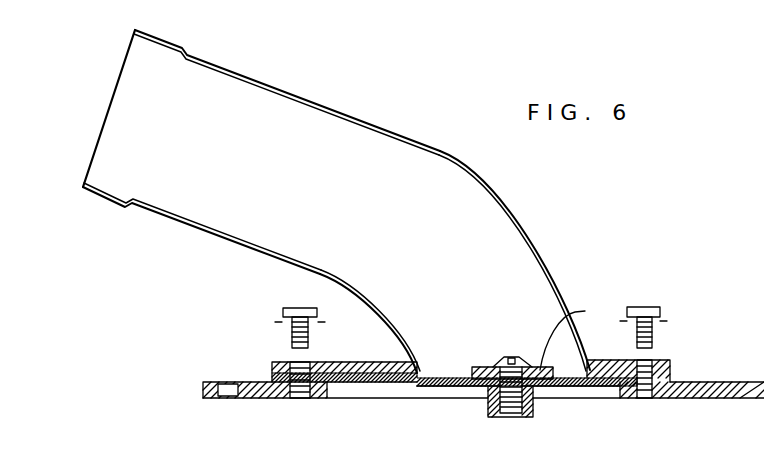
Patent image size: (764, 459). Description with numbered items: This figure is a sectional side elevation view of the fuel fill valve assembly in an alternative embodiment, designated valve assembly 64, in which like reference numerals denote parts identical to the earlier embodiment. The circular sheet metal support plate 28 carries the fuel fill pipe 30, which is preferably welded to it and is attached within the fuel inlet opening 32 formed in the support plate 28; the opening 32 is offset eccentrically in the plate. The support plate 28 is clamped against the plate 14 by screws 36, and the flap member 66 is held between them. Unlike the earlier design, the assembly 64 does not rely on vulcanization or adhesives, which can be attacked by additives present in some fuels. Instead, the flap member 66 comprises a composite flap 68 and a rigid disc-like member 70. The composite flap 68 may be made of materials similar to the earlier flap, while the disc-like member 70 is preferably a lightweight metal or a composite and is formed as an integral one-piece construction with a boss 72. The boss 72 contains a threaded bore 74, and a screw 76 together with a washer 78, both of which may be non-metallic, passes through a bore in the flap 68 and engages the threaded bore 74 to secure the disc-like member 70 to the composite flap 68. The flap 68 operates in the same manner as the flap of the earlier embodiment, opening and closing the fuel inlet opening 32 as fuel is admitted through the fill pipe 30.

The plate 14 is at (747, 398).
The support plate 28 is at (672, 360).
The fuel fill pipe 30 is at (457, 157).
The fuel inlet opening 32 is at (425, 363).
The screws 36 is at (296, 310).
The valve assembly 64 is at (569, 268).
The flap member 66 is at (461, 404).
The composite flap 68 is at (376, 384).
The rigid disc-like member 70 is at (563, 393).
The boss 72 is at (497, 417).
The threaded bore 74 is at (512, 414).
The screw 76 is at (512, 356).
The washer 78 is at (577, 334).